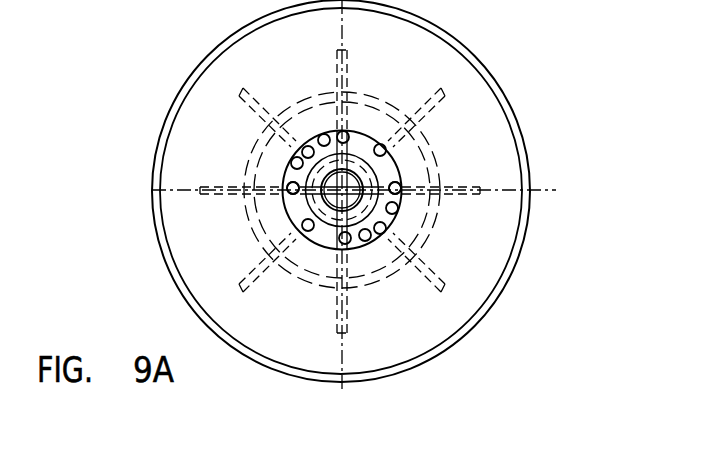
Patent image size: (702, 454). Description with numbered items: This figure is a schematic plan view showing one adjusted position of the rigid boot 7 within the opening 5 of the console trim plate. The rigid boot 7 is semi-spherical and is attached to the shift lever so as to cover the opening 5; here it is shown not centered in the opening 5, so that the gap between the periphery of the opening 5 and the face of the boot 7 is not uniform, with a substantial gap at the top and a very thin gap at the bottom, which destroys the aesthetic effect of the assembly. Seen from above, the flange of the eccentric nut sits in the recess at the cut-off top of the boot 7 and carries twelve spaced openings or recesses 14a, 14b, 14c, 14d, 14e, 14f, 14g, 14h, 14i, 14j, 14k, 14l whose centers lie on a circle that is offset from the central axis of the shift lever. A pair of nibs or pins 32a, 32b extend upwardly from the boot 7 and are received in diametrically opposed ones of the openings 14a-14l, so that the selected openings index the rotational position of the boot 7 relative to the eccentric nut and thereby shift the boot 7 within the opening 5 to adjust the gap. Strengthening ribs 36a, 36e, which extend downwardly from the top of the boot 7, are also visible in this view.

The opening 5 is at (483, 51).
The rigid boot 7 is at (504, 187).
The opening or recess 14a is at (290, 192).
The opening or recess 14b is at (292, 158).
The opening or recess 14c is at (306, 146).
The opening or recess 14d is at (324, 133).
The opening or recess 14e is at (346, 131).
The opening or recess 14f is at (385, 148).
The opening or recess 14g is at (403, 194).
The opening or recess 14h is at (396, 212).
The opening or recess 14i is at (381, 234).
The opening or recess 14j is at (364, 241).
The opening or recess 14k is at (342, 244).
The opening or recess 14l is at (306, 231).
The nib or pin 32a is at (287, 183).
The nib or pin 32b is at (404, 182).
The strengthening rib 36a is at (242, 190).
The strengthening rib 36e is at (448, 188).